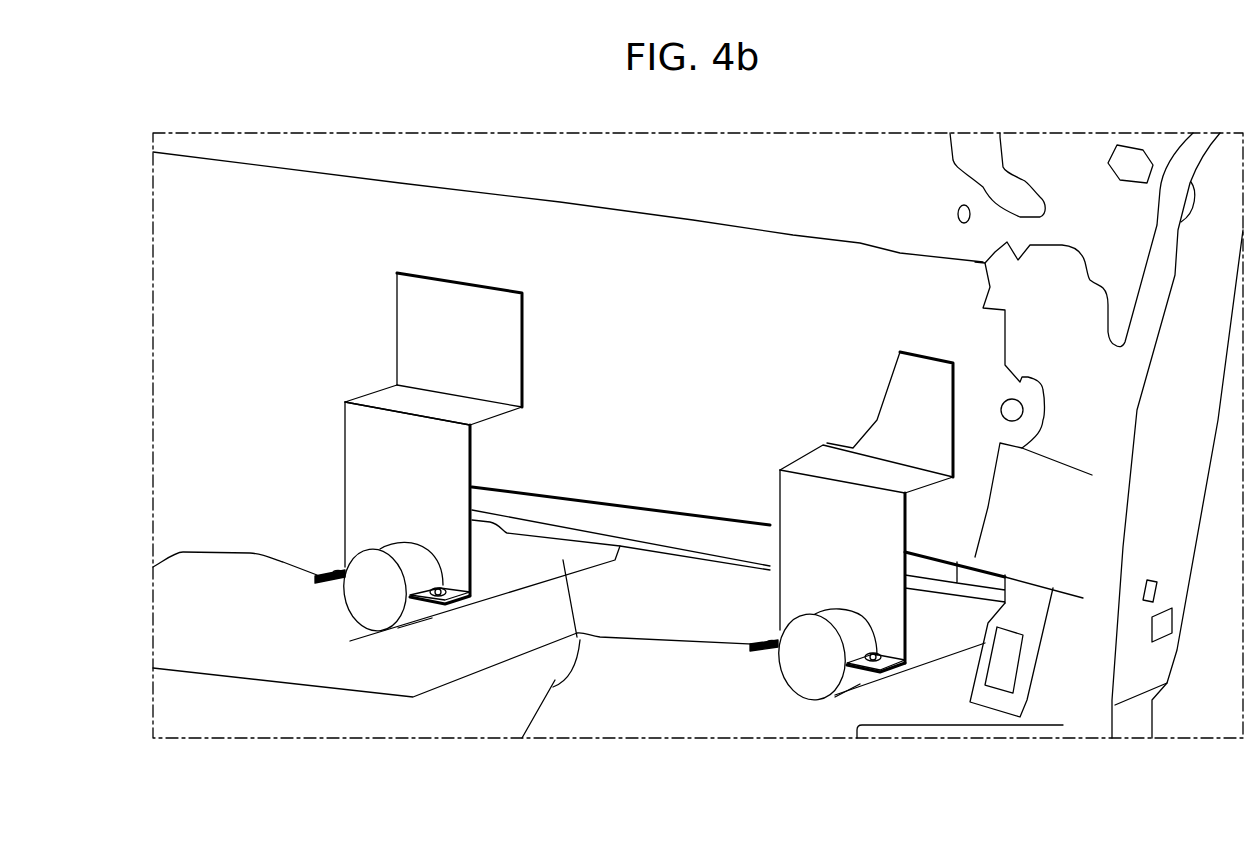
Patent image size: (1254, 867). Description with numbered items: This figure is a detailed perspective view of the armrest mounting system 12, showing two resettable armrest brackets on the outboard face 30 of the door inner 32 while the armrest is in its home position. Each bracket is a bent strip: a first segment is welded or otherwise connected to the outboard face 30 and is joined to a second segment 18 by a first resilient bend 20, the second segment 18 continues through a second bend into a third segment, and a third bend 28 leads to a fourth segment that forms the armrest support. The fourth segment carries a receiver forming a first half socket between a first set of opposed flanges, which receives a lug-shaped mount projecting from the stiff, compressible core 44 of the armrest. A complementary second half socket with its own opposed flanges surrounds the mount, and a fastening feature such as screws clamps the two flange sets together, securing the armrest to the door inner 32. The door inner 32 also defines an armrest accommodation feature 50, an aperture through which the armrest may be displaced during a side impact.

The armrest mounting system 12 is at (361, 751).
The second segment 18 is at (388, 398).
The first resilient bend 20 is at (465, 395).
The third bend 28 is at (503, 490).
The outboard face 30 is at (282, 218).
The door inner 32 is at (153, 298).
The core 44 is at (636, 603).
The armrest accommodation feature 50 is at (695, 650).